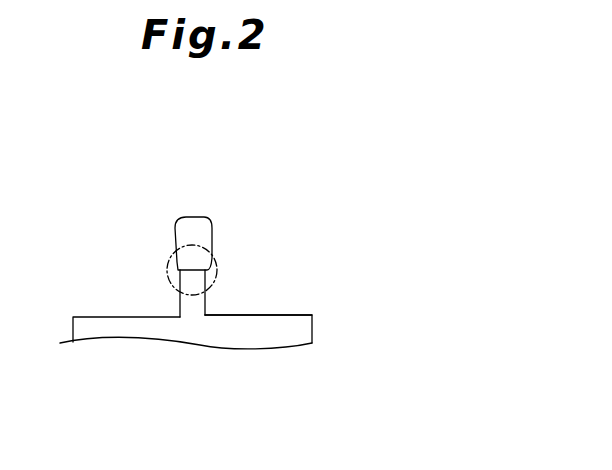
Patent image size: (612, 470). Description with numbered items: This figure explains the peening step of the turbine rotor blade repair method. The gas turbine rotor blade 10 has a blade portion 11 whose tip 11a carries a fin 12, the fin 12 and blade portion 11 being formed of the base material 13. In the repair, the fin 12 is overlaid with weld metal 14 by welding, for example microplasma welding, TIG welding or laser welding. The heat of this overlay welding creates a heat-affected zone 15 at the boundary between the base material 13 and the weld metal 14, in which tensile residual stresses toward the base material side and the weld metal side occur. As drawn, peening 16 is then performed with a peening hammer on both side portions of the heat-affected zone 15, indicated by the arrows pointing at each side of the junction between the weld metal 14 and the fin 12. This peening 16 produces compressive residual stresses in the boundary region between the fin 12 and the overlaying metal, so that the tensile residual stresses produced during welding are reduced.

The gas turbine rotor blade 10 is at (244, 192).
The blade portion 11 is at (282, 335).
The tip 11a is at (280, 315).
The fin 12 is at (205, 302).
The base material 13 is at (400, 273).
The weld metal 14 is at (190, 233).
The heat-affected zone 15 is at (213, 262).
The peening 16 is at (162, 276).